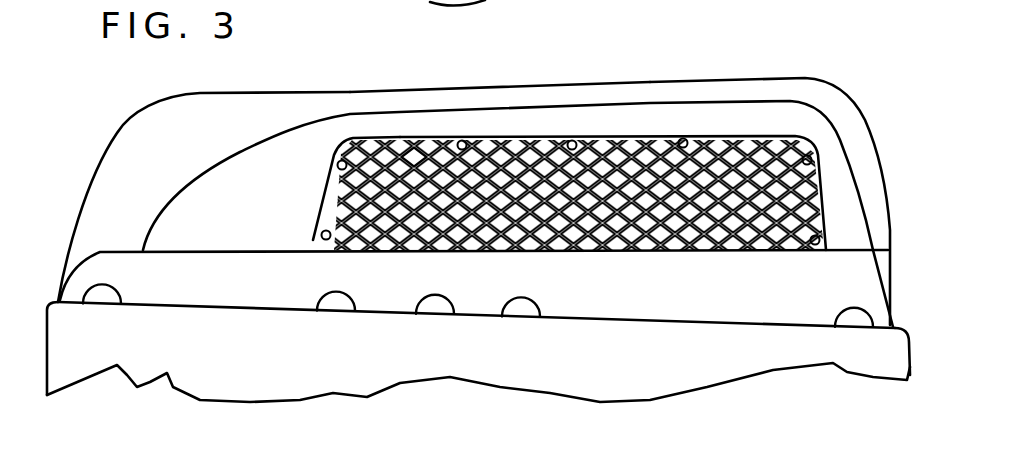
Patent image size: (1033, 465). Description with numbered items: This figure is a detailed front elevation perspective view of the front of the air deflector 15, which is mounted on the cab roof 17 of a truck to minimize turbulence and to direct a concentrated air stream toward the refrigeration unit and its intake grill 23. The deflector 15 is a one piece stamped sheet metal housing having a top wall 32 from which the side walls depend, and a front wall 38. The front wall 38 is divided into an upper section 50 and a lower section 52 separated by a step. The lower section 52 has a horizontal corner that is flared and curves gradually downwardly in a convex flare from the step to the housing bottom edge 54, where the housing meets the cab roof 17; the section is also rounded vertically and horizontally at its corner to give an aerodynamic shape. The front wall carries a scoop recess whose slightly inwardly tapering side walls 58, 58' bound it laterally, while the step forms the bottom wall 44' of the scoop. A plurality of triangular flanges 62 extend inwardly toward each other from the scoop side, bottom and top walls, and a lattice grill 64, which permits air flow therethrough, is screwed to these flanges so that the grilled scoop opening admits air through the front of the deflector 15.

The air deflector 15 is at (835, 58).
The cab roof 17 is at (748, 320).
The intake grill 23 is at (725, 200).
The top wall 32 is at (574, 81).
The front wall 38 is at (860, 125).
The bottom wall 44' is at (474, 257).
The upper section 50 is at (285, 113).
The lower section 52 is at (163, 157).
The housing bottom edge 54 is at (60, 307).
The side wall 58 is at (630, 193).
The side wall 58' is at (322, 188).
The triangular flanges 62 is at (347, 192).
The lattice grill 64 is at (407, 150).